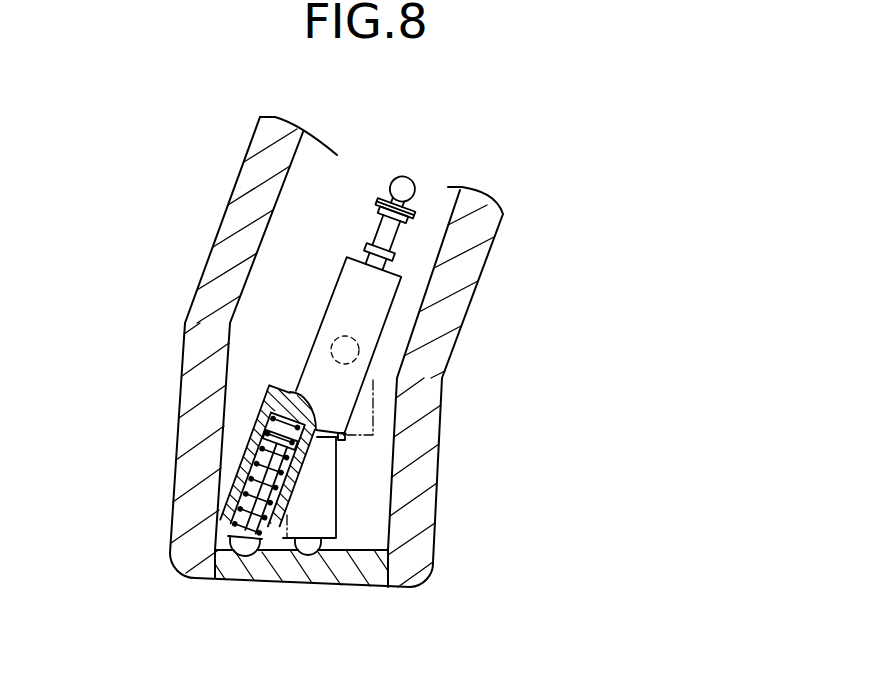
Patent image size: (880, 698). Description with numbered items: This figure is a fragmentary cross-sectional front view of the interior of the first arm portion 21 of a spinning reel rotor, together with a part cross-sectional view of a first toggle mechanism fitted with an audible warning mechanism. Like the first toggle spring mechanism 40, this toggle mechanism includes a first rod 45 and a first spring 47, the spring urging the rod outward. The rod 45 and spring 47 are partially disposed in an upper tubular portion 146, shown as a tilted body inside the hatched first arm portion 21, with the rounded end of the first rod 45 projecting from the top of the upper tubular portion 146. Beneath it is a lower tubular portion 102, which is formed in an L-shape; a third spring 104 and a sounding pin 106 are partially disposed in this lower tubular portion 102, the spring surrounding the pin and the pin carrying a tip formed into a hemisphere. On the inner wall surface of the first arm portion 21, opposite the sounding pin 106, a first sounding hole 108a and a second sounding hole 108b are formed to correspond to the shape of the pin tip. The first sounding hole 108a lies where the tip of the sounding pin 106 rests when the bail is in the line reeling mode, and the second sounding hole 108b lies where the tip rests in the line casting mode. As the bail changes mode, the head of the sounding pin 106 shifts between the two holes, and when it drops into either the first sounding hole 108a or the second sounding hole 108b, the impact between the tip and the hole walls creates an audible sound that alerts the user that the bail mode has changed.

The first arm portion 21 is at (430, 440).
The first toggle spring mechanism 40 is at (290, 310).
The first rod 45 is at (393, 177).
The first spring 47 is at (374, 226).
The lower tubular portion 102 is at (262, 470).
The third spring 104 is at (257, 428).
The sounding pin 106 is at (228, 542).
The first sounding hole 108a is at (236, 560).
The second sounding hole 108b is at (316, 562).
The upper tubular portion 146 is at (370, 323).